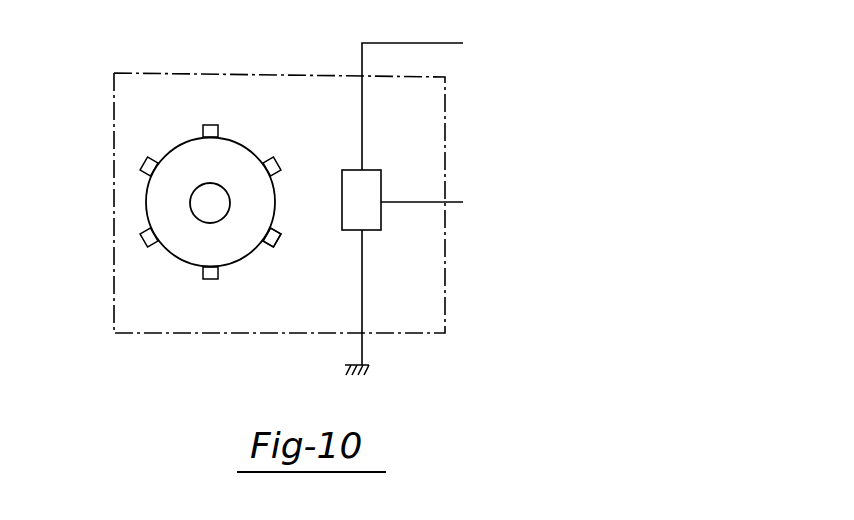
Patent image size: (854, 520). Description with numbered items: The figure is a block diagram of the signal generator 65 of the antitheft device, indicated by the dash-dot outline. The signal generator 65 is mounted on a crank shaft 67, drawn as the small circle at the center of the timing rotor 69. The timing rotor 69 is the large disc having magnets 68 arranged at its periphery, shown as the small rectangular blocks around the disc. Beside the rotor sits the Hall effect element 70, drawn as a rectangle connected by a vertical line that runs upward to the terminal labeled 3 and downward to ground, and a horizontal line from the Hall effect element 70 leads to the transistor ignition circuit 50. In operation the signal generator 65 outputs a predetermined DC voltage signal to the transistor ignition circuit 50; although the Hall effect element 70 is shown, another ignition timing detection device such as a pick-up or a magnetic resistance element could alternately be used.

The signal generator 65 is at (445, 310).
The crank shaft 67 is at (204, 210).
The magnets 68 is at (148, 240).
The timing rotor 69 is at (174, 147).
The Hall effect element 70 is at (381, 182).
The line to element 3 is at (436, 103).
The transistor ignition circuit 50 is at (453, 206).